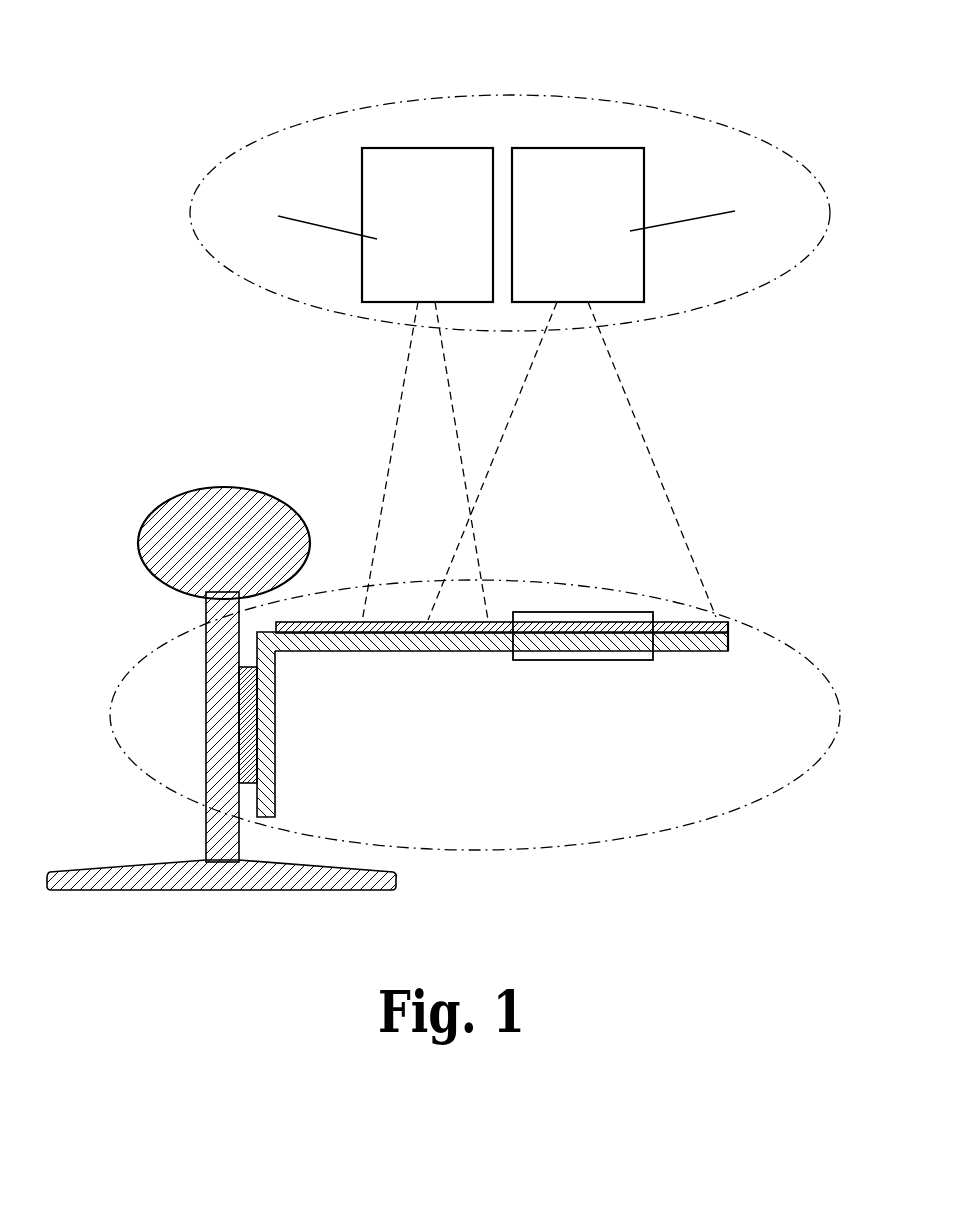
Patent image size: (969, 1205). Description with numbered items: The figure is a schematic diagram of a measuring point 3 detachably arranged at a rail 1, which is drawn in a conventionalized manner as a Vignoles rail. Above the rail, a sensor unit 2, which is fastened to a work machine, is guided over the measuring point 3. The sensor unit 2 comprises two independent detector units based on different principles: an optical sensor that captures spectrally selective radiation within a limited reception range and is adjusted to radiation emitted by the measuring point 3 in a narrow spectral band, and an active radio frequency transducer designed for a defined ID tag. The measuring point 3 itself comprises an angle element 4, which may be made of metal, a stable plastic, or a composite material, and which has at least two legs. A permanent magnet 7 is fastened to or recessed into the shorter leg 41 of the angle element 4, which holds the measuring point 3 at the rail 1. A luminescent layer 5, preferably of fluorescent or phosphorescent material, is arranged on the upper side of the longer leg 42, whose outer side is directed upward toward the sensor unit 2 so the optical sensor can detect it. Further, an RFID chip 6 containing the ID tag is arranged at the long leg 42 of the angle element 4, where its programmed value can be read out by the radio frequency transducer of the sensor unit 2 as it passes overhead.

The rail 1 is at (190, 510).
The sensor unit 2 is at (647, 106).
The measuring point 3 is at (747, 623).
The angle element 4 is at (462, 643).
The shorter leg 41 is at (277, 713).
The longer leg 42 is at (345, 647).
The luminescent layer 5 is at (730, 625).
The RFID chip 6 is at (617, 660).
The permanent magnet 7 is at (238, 750).